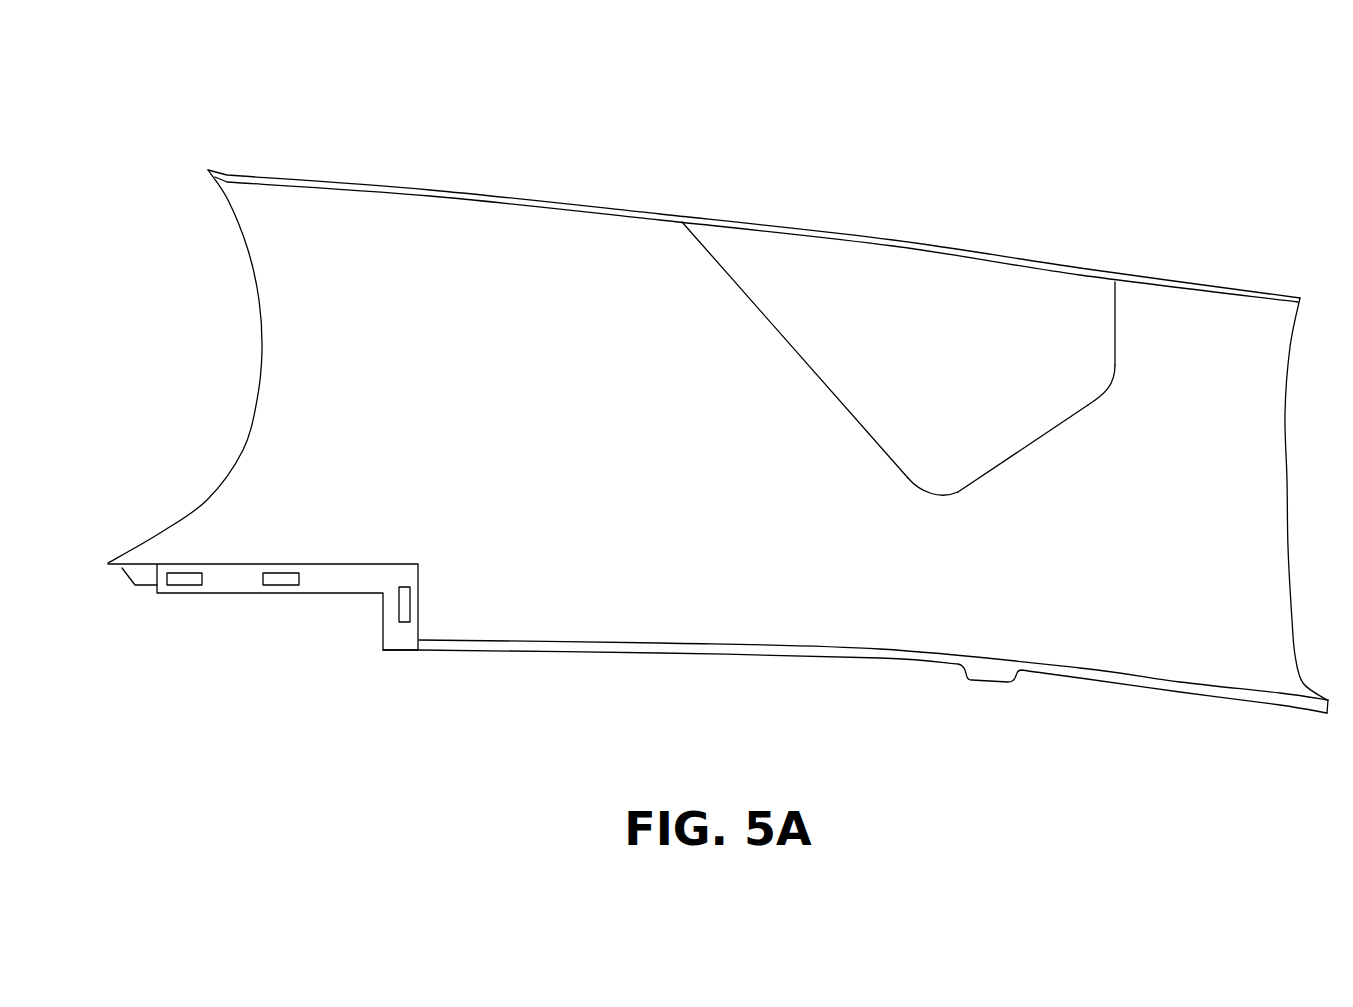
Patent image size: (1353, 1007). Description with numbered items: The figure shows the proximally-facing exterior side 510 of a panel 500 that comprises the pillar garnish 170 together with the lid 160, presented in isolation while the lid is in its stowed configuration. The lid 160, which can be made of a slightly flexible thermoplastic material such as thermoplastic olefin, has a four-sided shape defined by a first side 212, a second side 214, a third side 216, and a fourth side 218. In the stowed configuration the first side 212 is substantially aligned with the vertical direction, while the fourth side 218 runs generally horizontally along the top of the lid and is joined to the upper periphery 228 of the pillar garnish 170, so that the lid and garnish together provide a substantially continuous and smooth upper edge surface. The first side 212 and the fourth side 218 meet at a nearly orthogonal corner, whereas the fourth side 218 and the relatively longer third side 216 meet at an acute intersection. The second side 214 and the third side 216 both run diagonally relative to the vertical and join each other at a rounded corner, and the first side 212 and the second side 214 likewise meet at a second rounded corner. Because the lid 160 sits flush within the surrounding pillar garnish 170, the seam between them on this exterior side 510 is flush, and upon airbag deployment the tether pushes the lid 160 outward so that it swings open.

The panel 500 is at (718, 382).
The pillar garnish 170 is at (518, 416).
The lid 160 is at (953, 382).
The first side 212 is at (1116, 333).
The second side 214 is at (1027, 453).
The third side 216 is at (855, 415).
The fourth side 218 is at (893, 243).
The upper periphery 228 is at (550, 198).
The proximally-facing exterior side 510 is at (570, 603).